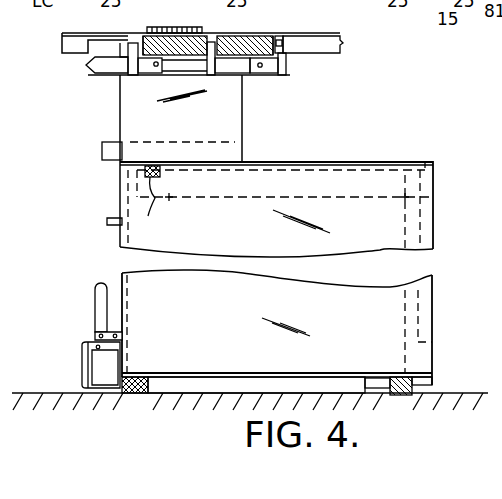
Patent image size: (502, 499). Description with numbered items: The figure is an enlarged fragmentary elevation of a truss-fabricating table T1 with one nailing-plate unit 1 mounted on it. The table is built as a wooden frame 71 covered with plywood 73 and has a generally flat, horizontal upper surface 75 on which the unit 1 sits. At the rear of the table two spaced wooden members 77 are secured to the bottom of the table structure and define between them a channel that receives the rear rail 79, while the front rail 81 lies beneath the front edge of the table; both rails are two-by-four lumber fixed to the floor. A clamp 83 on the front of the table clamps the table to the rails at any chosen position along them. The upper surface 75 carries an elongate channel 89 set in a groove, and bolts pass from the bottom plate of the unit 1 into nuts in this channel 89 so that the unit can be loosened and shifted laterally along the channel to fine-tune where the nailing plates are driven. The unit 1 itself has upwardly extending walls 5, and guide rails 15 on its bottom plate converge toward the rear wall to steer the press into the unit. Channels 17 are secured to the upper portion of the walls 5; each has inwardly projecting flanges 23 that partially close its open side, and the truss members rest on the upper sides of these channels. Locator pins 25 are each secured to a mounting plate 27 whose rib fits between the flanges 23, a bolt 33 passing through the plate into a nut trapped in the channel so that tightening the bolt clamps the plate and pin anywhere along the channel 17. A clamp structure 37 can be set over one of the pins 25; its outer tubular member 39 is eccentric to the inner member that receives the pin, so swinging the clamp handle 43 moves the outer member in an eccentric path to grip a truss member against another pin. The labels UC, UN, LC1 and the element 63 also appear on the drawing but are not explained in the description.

The unit 1 is at (63, 111).
The walls 5 is at (186, 133).
The guide rails 15 is at (106, 142).
The channels 17 is at (221, 76).
The flanges 23 is at (90, 58).
The pins 25 is at (123, 75).
The mounting plate 27 is at (147, 68).
The bolt 33 is at (182, 90).
The clamp structure 37 is at (296, 59).
The outer tubular member 39 is at (288, 45).
The clamp handle 43 is at (300, 47).
The bracket 63 is at (133, 44).
The wooden frame 71 is at (402, 320).
The plywood 73 is at (284, 308).
The upper surface 75 is at (422, 162).
The spaced wooden members 77 is at (372, 380).
The rear rail 79 is at (402, 395).
The front rail 81 is at (138, 395).
The clamp 83 is at (96, 334).
The elongate channel 89 is at (161, 200).
The table T1 is at (389, 148).
The upper casing UC is at (262, 36).
The upper nut UN is at (174, 27).
The lower casing LC1 is at (144, 40).